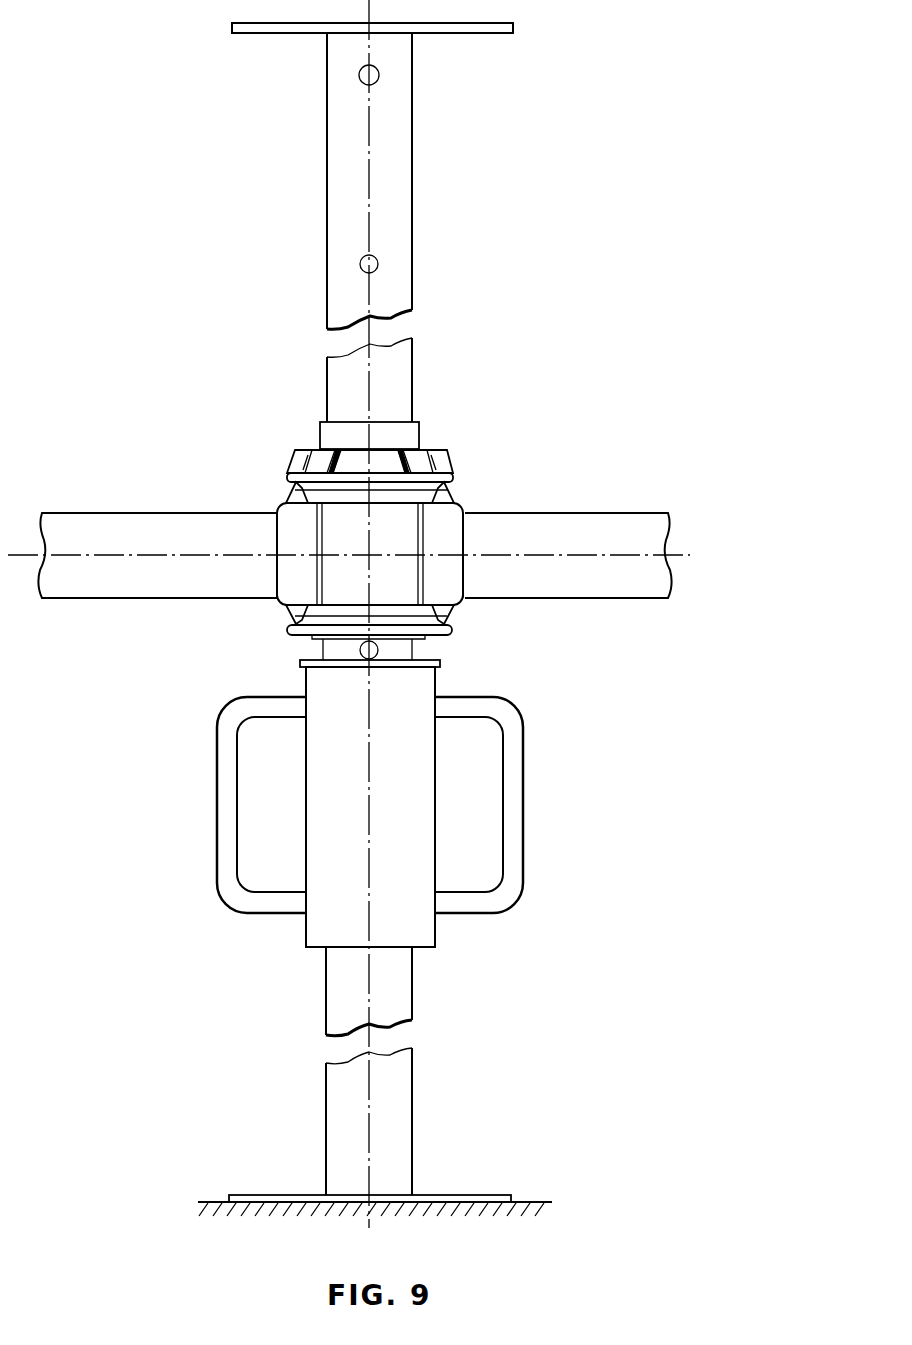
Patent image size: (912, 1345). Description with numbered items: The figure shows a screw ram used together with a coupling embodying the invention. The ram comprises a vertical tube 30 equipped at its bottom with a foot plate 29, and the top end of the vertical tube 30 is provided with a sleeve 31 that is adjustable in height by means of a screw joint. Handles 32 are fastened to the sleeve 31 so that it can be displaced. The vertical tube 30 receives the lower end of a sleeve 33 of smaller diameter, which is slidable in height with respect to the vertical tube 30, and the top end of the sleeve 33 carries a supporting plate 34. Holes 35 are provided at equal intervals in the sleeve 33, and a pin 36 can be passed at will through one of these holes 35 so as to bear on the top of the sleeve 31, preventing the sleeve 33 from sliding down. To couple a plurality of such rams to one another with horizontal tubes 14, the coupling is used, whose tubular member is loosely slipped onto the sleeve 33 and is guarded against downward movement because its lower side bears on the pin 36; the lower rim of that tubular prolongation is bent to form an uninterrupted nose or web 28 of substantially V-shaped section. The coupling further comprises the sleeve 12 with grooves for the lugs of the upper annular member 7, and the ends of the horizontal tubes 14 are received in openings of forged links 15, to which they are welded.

The upper annular member 7 is at (449, 450).
The sleeve 12 is at (331, 436).
The horizontal tubes 14 is at (107, 523).
The link 15 is at (289, 518).
The nose or web 28 is at (450, 633).
The foot plate 29 is at (462, 1197).
The vertical tube 30 is at (413, 1083).
The sleeve 31 is at (422, 935).
The handles 32 is at (514, 823).
The sleeve 33 is at (414, 257).
The supporting plate 34 is at (478, 34).
The holes 35 is at (361, 262).
The pin 36 is at (361, 652).